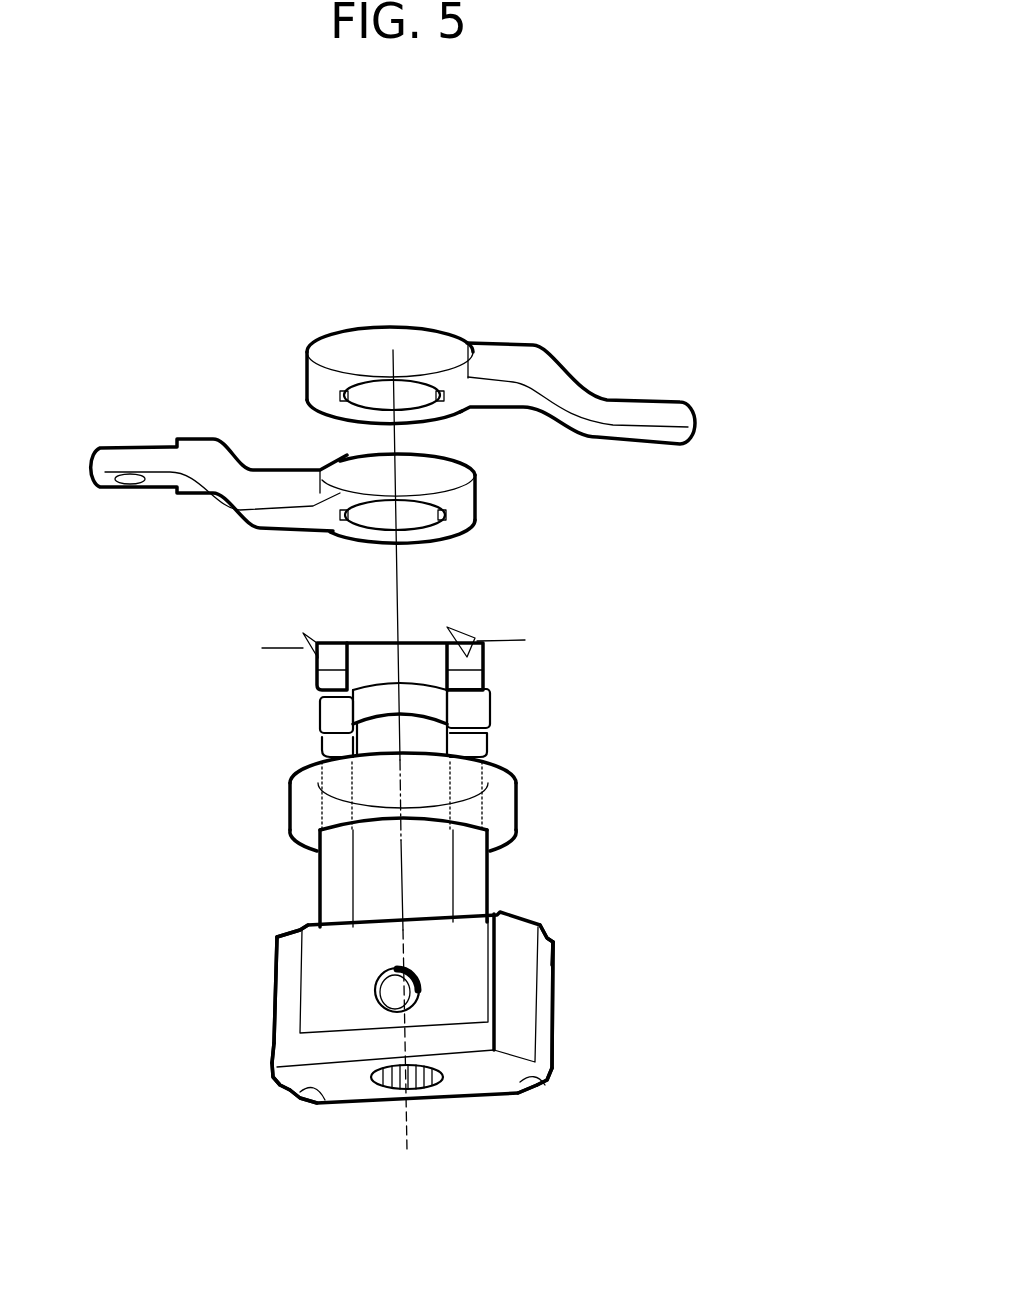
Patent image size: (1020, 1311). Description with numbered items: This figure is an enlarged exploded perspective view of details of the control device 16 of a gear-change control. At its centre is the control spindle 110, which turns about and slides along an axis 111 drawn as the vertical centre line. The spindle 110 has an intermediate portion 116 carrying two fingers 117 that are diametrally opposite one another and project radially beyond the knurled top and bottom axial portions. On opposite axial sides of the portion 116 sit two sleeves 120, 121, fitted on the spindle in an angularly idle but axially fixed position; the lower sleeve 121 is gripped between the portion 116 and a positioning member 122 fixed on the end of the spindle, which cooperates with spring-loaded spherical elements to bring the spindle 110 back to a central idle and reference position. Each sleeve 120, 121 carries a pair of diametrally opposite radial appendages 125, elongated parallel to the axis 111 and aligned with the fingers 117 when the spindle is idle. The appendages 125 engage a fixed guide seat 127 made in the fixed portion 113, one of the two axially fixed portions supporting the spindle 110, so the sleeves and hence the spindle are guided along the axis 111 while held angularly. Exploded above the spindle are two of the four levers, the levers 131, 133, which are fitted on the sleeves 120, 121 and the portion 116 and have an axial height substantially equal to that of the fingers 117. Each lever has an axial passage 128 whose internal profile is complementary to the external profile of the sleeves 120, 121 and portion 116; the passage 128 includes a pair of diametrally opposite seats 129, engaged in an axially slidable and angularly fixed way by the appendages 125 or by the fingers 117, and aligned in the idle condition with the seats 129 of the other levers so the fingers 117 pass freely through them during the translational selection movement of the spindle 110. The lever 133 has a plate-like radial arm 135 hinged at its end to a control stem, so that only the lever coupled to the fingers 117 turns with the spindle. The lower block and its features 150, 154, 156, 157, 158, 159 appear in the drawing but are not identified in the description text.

The control device 16 is at (710, 666).
The control spindle 110 is at (500, 717).
The axis 111 is at (407, 1108).
The fixed portion 113 is at (507, 800).
The intermediate portion 116 is at (478, 687).
The fingers 117 is at (470, 707).
The sleeve 120 is at (420, 657).
The sleeve 121 is at (437, 735).
The positioning member 122 is at (353, 1093).
The radial appendages 125 is at (337, 660).
The fixed guide seat 127 is at (425, 830).
The axial passage 128 is at (378, 393).
The seats 129 is at (345, 402).
The lever 131 is at (218, 498).
The lever 133 is at (589, 446).
The radial arm 135 is at (563, 386).
The base 150 is at (417, 1095).
The edge 154 is at (557, 958).
The foot 156 is at (272, 1092).
The corner 157 is at (268, 940).
The side face 158 is at (273, 1030).
The slot 159 is at (315, 1103).